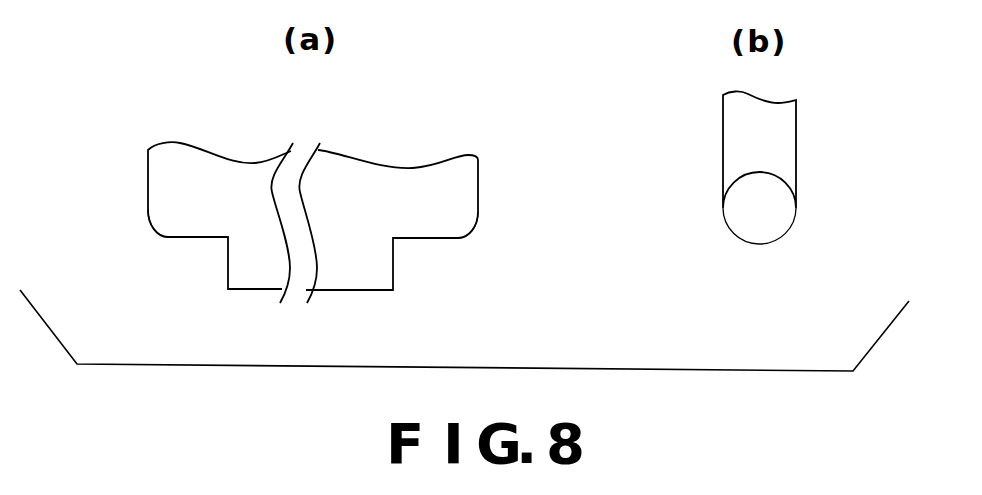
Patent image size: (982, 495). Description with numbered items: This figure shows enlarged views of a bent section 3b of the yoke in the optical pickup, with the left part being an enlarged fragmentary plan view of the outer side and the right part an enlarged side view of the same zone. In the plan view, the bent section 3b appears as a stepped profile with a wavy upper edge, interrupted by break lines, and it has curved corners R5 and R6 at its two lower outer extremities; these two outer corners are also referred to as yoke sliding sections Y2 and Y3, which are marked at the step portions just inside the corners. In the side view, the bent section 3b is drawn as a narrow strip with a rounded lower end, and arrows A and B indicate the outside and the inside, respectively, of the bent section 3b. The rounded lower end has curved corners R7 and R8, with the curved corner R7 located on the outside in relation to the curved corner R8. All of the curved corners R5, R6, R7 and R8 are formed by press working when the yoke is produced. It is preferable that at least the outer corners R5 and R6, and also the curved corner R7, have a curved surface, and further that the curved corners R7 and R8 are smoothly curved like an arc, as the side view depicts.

The bent section 3b is at (165, 183).
The curved corner R5 is at (146, 230).
The curved corner R6 is at (478, 239).
The curved corner R7 is at (722, 235).
The curved corner R8 is at (794, 240).
The yoke sliding section Y2 is at (163, 237).
The yoke sliding section Y3 is at (463, 240).
The arrow A is at (712, 132).
The arrow B is at (803, 132).